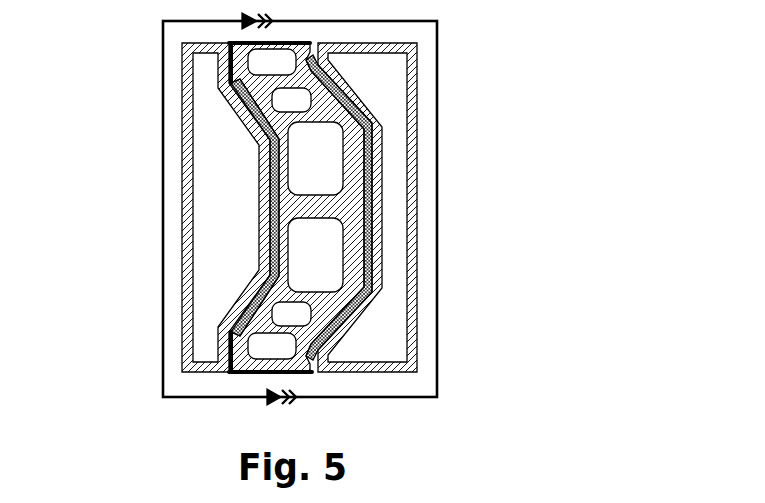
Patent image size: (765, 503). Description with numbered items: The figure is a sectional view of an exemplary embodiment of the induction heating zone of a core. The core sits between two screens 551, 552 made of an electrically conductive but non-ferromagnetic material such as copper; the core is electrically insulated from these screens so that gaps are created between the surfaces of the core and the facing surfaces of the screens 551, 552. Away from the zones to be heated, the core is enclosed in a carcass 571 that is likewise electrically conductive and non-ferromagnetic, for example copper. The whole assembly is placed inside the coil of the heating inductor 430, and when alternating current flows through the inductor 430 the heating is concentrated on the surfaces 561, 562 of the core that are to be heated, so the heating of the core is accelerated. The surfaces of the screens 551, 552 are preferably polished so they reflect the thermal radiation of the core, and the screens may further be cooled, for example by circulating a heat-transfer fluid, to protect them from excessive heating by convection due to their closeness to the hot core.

The heating inductor 430 is at (374, 422).
The screen 551 is at (181, 187).
The screen 552 is at (413, 283).
The surface to be heated 561 is at (272, 228).
The surface to be heated 562 is at (368, 208).
The carcass 571 is at (247, 375).